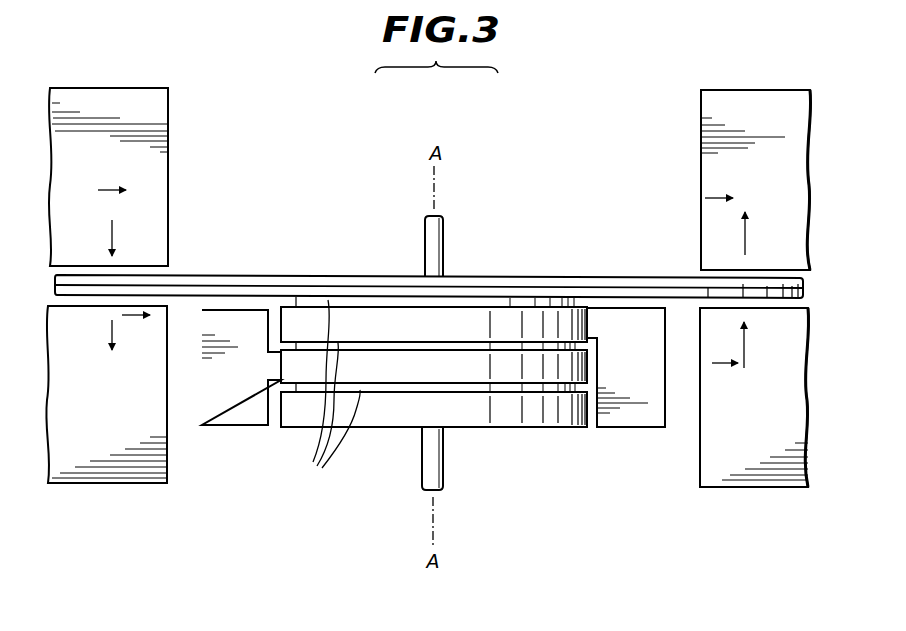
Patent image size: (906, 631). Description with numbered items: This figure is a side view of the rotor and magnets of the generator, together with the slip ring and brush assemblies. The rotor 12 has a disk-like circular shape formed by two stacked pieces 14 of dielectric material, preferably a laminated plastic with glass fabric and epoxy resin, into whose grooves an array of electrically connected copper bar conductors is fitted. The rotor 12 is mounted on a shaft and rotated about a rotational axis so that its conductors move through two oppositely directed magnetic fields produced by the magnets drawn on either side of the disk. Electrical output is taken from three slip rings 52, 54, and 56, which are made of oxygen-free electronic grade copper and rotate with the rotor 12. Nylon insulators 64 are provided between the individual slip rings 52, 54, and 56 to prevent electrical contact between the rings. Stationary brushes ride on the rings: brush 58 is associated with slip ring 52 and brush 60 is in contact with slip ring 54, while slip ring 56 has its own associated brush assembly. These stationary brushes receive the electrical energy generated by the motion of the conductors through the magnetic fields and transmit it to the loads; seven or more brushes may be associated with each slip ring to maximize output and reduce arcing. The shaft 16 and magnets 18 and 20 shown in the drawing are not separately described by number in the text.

The rotor 12 is at (636, 275).
The stacked pieces of dielectric material 14 is at (190, 273).
The pivot shaft 16 is at (444, 218).
The permanent magnet 18 is at (107, 285).
The permanent magnet 20 is at (755, 288).
The slip ring 52 is at (434, 319).
The slip ring 54 is at (434, 362).
The slip ring 56 is at (434, 405).
The brush 58 is at (626, 367).
The brush 60 is at (241, 367).
The nylon insulators 64 is at (322, 384).